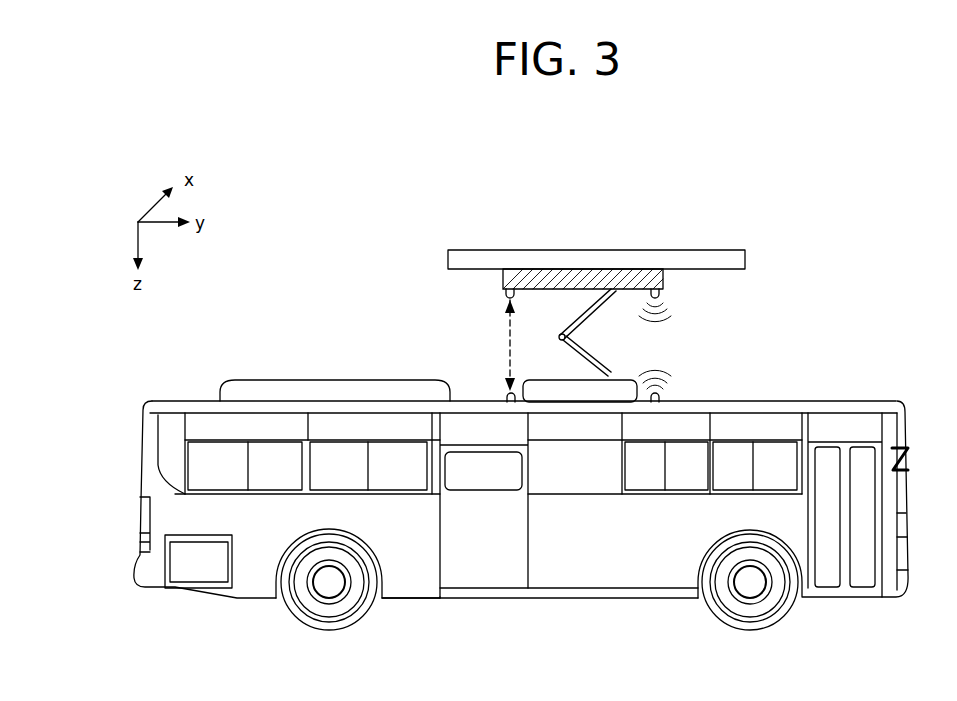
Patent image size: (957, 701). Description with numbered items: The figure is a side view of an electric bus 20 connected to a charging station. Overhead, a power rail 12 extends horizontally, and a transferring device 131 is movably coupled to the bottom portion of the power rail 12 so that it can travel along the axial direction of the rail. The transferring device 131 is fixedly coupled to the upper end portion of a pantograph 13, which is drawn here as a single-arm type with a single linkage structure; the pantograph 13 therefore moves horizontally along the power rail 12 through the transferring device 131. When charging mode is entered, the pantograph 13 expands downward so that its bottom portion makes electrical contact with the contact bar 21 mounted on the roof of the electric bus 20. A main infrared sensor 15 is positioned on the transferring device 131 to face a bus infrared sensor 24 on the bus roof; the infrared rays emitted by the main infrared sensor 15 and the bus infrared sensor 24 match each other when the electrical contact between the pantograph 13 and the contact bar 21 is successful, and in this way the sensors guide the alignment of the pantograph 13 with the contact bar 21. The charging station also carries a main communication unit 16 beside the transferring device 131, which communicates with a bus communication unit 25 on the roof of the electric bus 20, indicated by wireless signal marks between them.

The power rail 12 is at (726, 250).
The pantograph 13 is at (593, 311).
The transferring device 131 is at (663, 283).
The main infrared sensor 15 is at (505, 295).
The main communication unit 16 is at (661, 298).
The electric bus 20 is at (900, 428).
The contact bar 21 is at (557, 390).
The bus infrared sensor 24 is at (507, 393).
The bus communication unit 25 is at (660, 397).